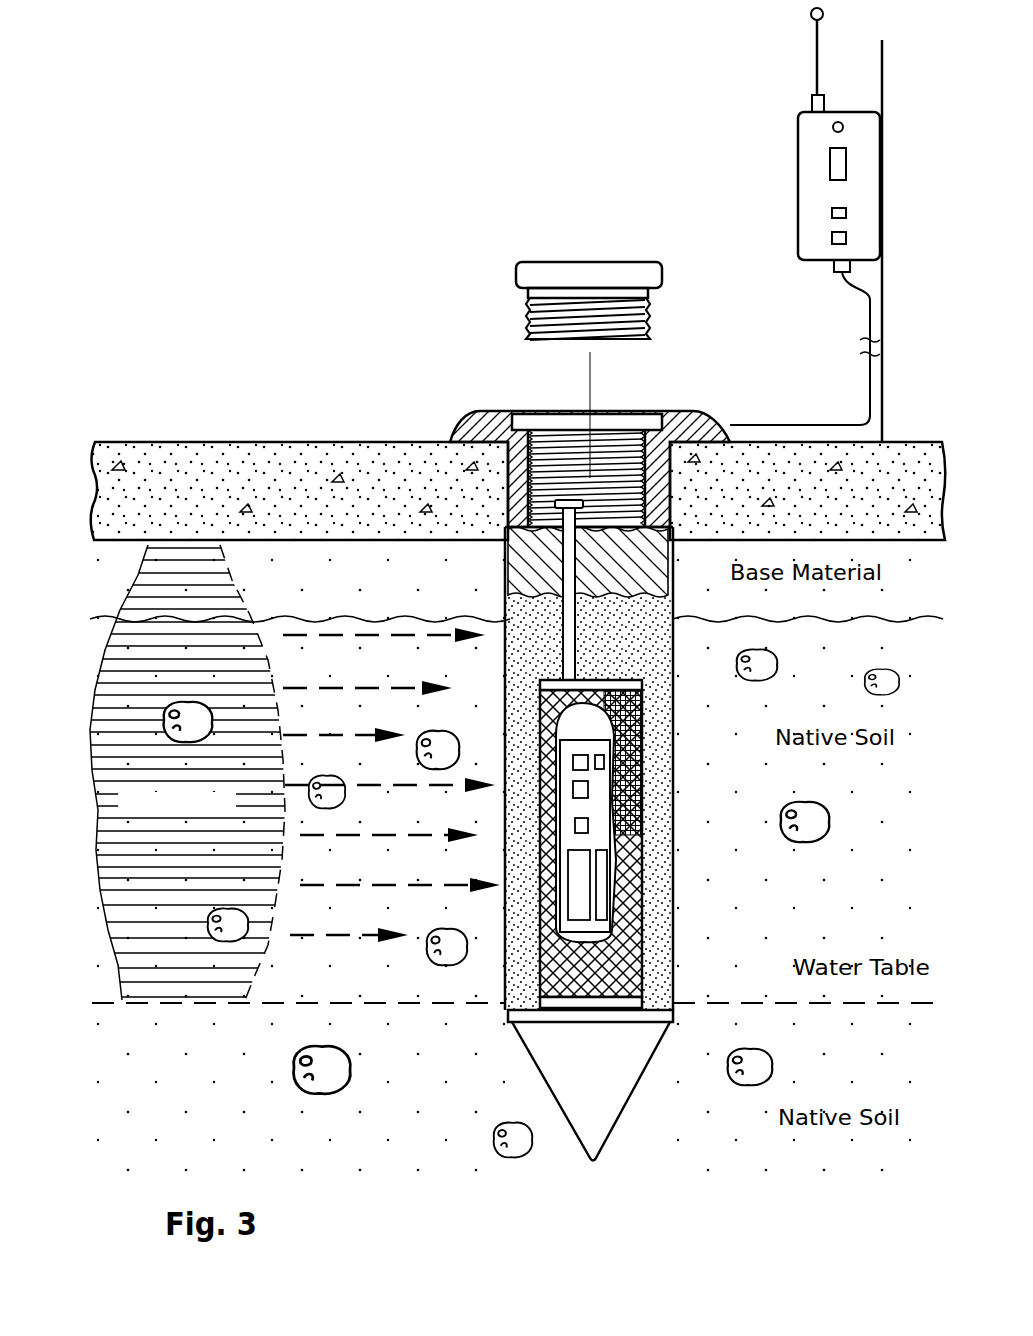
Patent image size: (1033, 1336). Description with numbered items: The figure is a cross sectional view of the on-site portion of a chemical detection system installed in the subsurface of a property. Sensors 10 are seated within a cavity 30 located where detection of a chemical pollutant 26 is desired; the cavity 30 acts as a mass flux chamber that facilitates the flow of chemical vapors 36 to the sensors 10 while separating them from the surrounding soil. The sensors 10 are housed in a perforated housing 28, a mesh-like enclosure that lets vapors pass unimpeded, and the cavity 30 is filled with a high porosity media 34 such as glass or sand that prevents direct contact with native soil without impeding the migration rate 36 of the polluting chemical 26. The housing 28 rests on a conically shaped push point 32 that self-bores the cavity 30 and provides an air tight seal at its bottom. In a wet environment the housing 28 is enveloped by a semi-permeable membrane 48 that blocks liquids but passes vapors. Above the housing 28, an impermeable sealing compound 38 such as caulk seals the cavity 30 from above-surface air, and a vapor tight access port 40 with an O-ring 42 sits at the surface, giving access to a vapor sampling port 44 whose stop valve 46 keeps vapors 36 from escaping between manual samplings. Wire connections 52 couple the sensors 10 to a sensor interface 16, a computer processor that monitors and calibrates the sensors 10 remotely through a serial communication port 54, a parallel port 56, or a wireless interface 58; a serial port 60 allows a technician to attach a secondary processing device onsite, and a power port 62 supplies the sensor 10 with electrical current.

The sensors 10 is at (558, 770).
The sensor interface 16 is at (818, 262).
The chemical pollutant 26 is at (150, 965).
The perforated housing 28 is at (645, 912).
The cavity 30 is at (663, 990).
The push point 32 is at (597, 1073).
The high porosity media 34 is at (632, 655).
The chemical vapors 36 is at (412, 686).
The impermeable sealing compound 38 is at (520, 580).
The access port 40 is at (585, 262).
The O-ring 42 is at (652, 296).
The vapor sampling port 44 is at (568, 555).
The stop valve 46 is at (537, 550).
The semi-permeable membrane 48 is at (644, 772).
The wire connections 52 is at (768, 425).
The RS-232 port 54 is at (830, 242).
The parallel port 56 is at (832, 214).
The wireless interface 58 is at (809, 10).
The serial port 60 is at (830, 170).
The power port 62 is at (832, 128).